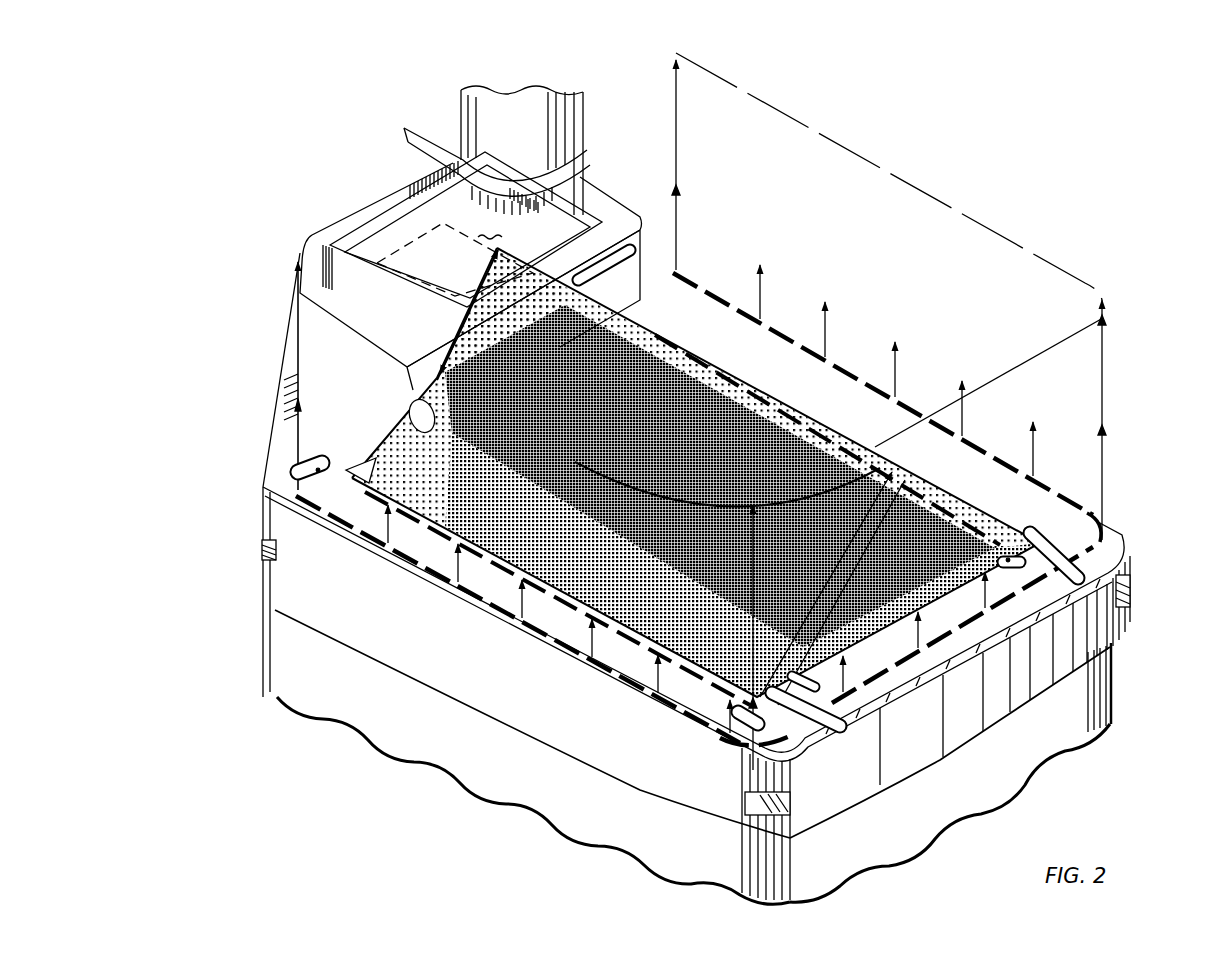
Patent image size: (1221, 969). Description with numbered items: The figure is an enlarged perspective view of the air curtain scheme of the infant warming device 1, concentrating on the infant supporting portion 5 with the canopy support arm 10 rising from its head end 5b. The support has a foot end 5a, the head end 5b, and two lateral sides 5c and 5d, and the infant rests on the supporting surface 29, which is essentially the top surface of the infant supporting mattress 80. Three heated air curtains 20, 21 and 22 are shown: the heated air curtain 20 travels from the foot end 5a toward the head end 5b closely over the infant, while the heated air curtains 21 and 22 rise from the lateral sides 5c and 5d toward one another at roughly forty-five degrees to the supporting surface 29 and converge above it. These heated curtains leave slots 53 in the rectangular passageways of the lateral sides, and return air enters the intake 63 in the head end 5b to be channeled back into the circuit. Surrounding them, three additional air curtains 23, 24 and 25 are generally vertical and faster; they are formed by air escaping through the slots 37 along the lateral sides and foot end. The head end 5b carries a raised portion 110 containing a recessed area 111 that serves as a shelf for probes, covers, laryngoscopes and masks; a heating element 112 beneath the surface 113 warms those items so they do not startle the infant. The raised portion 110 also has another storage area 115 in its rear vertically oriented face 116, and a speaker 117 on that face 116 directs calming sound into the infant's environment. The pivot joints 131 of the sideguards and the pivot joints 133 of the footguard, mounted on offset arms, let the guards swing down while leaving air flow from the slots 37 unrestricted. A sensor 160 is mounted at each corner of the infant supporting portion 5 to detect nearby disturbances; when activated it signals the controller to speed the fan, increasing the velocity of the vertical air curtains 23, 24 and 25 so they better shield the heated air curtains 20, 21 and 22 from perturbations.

The infant warming device 1 is at (988, 124).
The infant supporting portion 5 is at (256, 540).
The foot end 5a is at (1083, 638).
The head end 5b is at (298, 345).
The lateral side 5c is at (500, 703).
The lateral side 5d is at (1050, 480).
The canopy support arm 10 is at (458, 91).
The heated air curtain 20 is at (730, 405).
The heated air curtain 21 is at (476, 300).
The heated air curtain 22 is at (928, 500).
The air curtain 23 is at (918, 226).
The air curtain 24 is at (1062, 380).
The air curtain 25 is at (362, 452).
The supporting surface 29 is at (330, 440).
The slots 37 is at (452, 598).
The slots 53 is at (683, 355).
The intake 63 is at (462, 335).
The infant supporting mattress 80 is at (795, 438).
The raised portion 110 is at (312, 236).
The recessed area 111 is at (368, 222).
The heating element 112 is at (390, 202).
The surface 113 is at (455, 252).
The storage area 115 is at (650, 243).
The rear vertically oriented face 116 is at (624, 262).
The speaker 117 is at (400, 405).
The pivot joints 131 is at (292, 473).
The pivot joints 133 is at (857, 712).
The sensor 160 is at (264, 556).